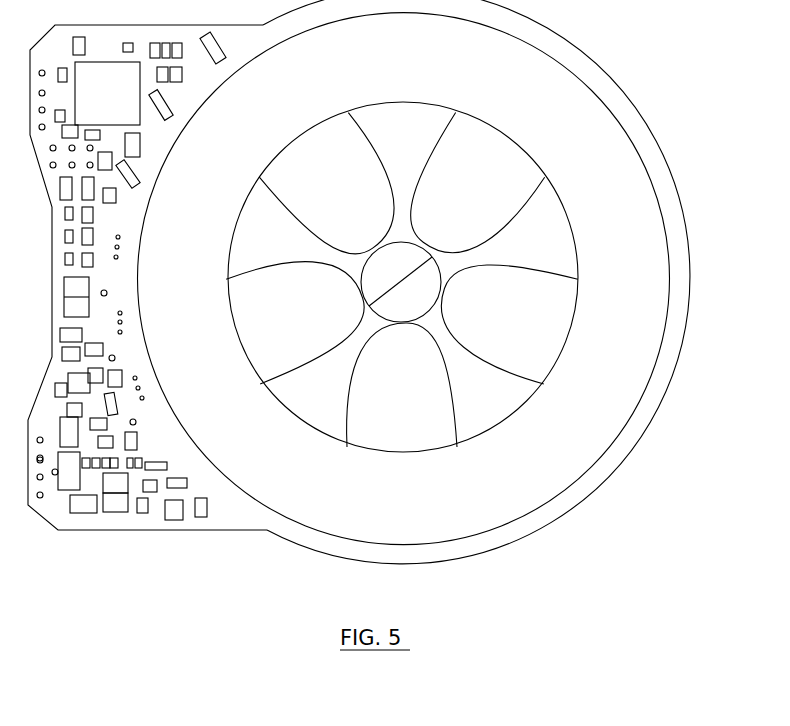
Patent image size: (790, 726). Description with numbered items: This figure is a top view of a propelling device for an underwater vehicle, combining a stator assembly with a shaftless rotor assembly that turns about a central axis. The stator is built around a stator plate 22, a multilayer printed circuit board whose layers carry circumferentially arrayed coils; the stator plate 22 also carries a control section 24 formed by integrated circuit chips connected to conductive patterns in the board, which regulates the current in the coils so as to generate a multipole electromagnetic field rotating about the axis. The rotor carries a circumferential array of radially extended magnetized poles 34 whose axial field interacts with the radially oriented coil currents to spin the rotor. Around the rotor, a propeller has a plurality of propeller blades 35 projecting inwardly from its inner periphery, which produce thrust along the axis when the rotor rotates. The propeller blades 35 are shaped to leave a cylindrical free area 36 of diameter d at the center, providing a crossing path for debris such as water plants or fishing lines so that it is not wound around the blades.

The stator plate 22 is at (476, 282).
The control section 24 is at (78, 530).
The magnetized poles 34 is at (445, 279).
The propeller blades 35 is at (522, 177).
The cylindrical free area 36 is at (452, 261).